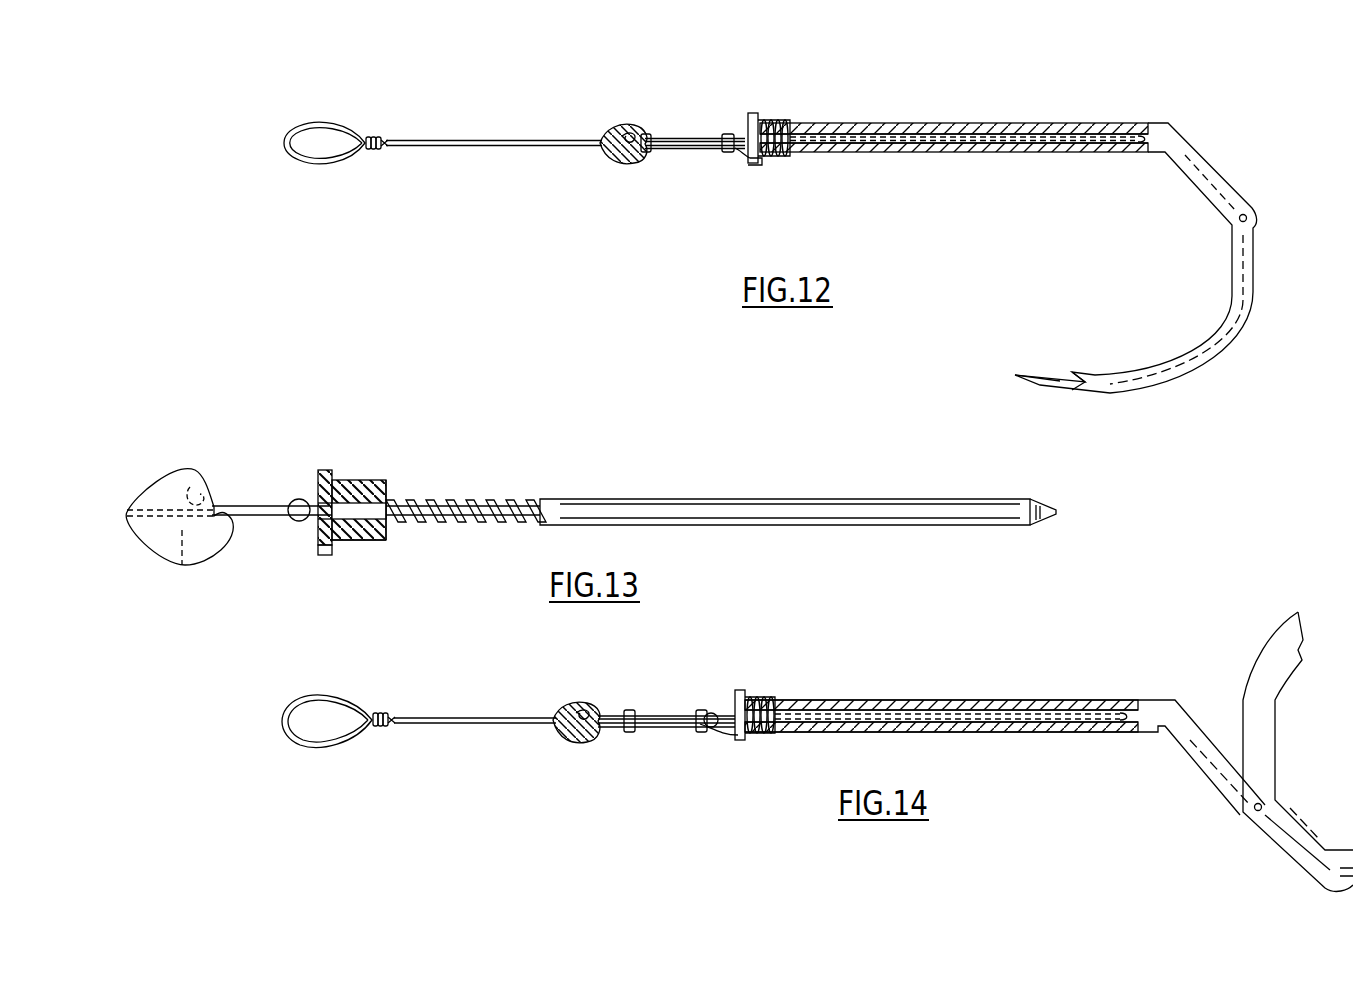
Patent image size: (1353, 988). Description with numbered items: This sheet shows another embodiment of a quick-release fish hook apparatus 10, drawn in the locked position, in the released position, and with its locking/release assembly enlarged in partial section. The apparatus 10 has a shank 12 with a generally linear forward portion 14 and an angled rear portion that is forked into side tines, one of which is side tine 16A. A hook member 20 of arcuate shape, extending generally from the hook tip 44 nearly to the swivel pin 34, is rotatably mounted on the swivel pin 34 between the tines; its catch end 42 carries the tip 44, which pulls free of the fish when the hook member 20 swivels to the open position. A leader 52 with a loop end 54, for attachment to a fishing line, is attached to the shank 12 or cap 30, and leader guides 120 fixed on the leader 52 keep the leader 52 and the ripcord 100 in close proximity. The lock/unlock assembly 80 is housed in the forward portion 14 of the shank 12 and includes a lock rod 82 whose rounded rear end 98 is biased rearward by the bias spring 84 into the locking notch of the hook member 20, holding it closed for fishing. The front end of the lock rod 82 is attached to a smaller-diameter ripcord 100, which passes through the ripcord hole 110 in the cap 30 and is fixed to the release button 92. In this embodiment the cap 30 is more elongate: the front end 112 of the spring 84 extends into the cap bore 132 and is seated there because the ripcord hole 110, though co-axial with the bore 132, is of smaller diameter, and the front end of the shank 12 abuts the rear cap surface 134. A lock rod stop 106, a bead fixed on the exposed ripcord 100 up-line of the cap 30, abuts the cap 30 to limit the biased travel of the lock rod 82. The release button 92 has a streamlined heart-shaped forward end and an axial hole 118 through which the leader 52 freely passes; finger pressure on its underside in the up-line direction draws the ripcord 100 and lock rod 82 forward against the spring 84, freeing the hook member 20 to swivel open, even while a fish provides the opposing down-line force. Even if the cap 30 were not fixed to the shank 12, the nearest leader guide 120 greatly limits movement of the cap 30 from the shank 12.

In FIG. 12, the quick-release fish hook apparatus 10 is at (238, 102).
In FIG. 14, the quick-release fish hook apparatus 10 is at (280, 700).
In FIG. 12, the shank 12 is at (950, 123).
In FIG. 14, the shank 12 is at (920, 700).
In FIG. 14, the forward portion 14 is at (1012, 700).
In FIG. 14, the side tine 16A is at (1196, 765).
In FIG. 12, the hook member 20 is at (1245, 303).
In FIG. 14, the hook member 20 is at (1262, 748).
In FIG. 12, the cap 30 is at (754, 163).
In FIG. 13, the cap 30 is at (354, 480).
In FIG. 14, the cap 30 is at (742, 741).
In FIG. 12, the swivel pin 34 is at (1250, 215).
In FIG. 14, the swivel pin 34 is at (1250, 816).
In FIG. 12, the catch end 42 is at (1072, 392).
In FIG. 12, the tip 44 is at (1020, 376).
In FIG. 12, the leader 52 is at (432, 140).
In FIG. 14, the leader 52 is at (475, 730).
In FIG. 12, the loop end 54 is at (288, 128).
In FIG. 14, the loop end 54 is at (352, 695).
In FIG. 13, the lock/unlock assembly 80 is at (240, 418).
In FIG. 13, the lock rod 82 is at (766, 505).
In FIG. 13, the bias spring 84 is at (430, 505).
In FIG. 12, the release button 92 is at (605, 160).
In FIG. 13, the release button 92 is at (178, 492).
In FIG. 14, the release button 92 is at (567, 746).
In FIG. 13, the rear end of lock rod 98 is at (1042, 516).
In FIG. 12, the ripcord 100 is at (656, 140).
In FIG. 13, the ripcord 100 is at (255, 505).
In FIG. 13, the lock rod stop 106 is at (298, 497).
In FIG. 14, the lock rod stop 106 is at (712, 712).
In FIG. 13, the ripcord hole 110 is at (318, 530).
In FIG. 13, the front end of spring 112 is at (348, 541).
In FIG. 13, the axial hole 118 is at (182, 565).
In FIG. 12, the leader guide 120 is at (728, 134).
In FIG. 14, the leader guide 120 is at (698, 710).
In FIG. 13, the cap bore 132 is at (340, 470).
In FIG. 13, the rear cap surface 134 is at (388, 488).